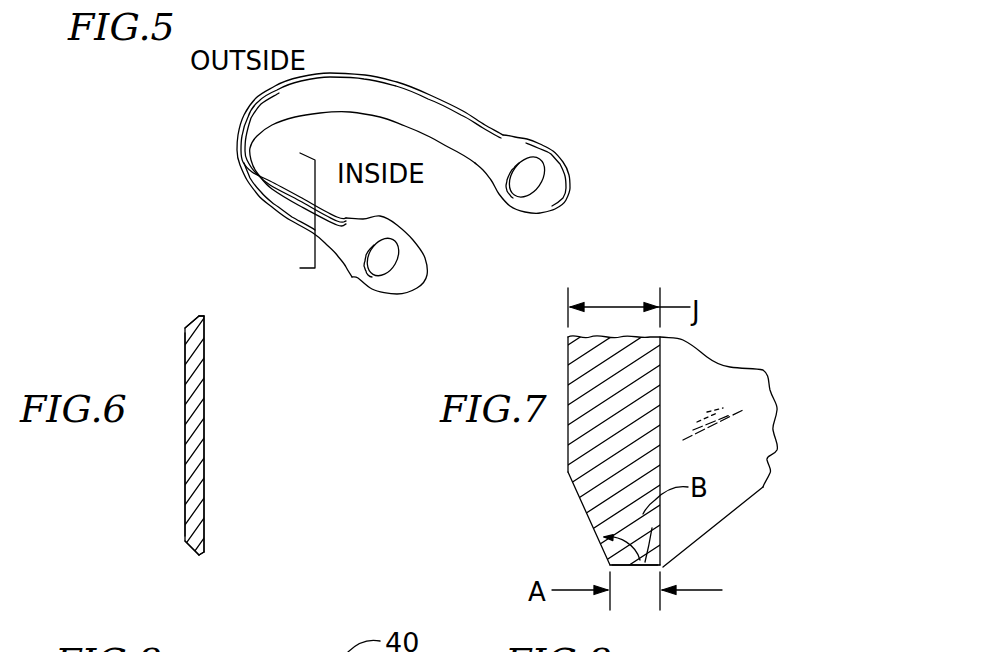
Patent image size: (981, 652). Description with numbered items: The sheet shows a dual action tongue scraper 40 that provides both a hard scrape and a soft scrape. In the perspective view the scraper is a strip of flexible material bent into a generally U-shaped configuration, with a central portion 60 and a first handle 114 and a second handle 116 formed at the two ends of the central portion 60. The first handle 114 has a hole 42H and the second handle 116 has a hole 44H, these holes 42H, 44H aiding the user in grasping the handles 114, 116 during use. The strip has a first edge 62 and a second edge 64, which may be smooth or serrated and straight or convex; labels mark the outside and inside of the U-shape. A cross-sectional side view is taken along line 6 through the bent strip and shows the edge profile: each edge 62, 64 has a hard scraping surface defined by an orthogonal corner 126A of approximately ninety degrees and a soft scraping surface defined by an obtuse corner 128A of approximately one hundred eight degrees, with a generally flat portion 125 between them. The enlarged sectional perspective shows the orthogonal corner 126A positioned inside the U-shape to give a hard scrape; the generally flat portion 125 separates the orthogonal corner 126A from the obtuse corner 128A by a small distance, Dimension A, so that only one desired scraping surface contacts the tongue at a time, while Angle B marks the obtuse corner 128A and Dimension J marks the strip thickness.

In FIG. 5, the dual action tongue scraper 40 is at (395, 66).
In FIG. 6, the dual action tongue scraper 40 is at (217, 432).
In FIG. 7, the dual action tongue scraper 40 is at (692, 292).
In FIG. 5, the second edge 64 is at (443, 104).
In FIG. 6, the second edge 64 is at (190, 312).
In FIG. 5, the first edge 62 is at (388, 117).
In FIG. 6, the first edge 62 is at (230, 568).
In FIG. 7, the first edge 62 is at (675, 602).
In FIG. 5, the central portion 60 is at (238, 134).
In FIG. 5, the obtuse corner 128A is at (248, 106).
In FIG. 6, the obtuse corner 128A is at (195, 322).
In FIG. 7, the obtuse corner 128A is at (610, 565).
In FIG. 6, the orthogonal corner 126A is at (203, 316).
In FIG. 7, the orthogonal corner 126A is at (663, 566).
In FIG. 6, the generally flat portion 125 is at (199, 316).
In FIG. 7, the generally flat portion 125 is at (660, 523).
In FIG. 5, the first handle 114 is at (550, 142).
In FIG. 5, the second handle 116 is at (384, 292).
In FIG. 5, the hole 42H is at (560, 187).
In FIG. 5, the hole 44H is at (397, 258).
In FIG. 5, the section line 6 is at (290, 200).